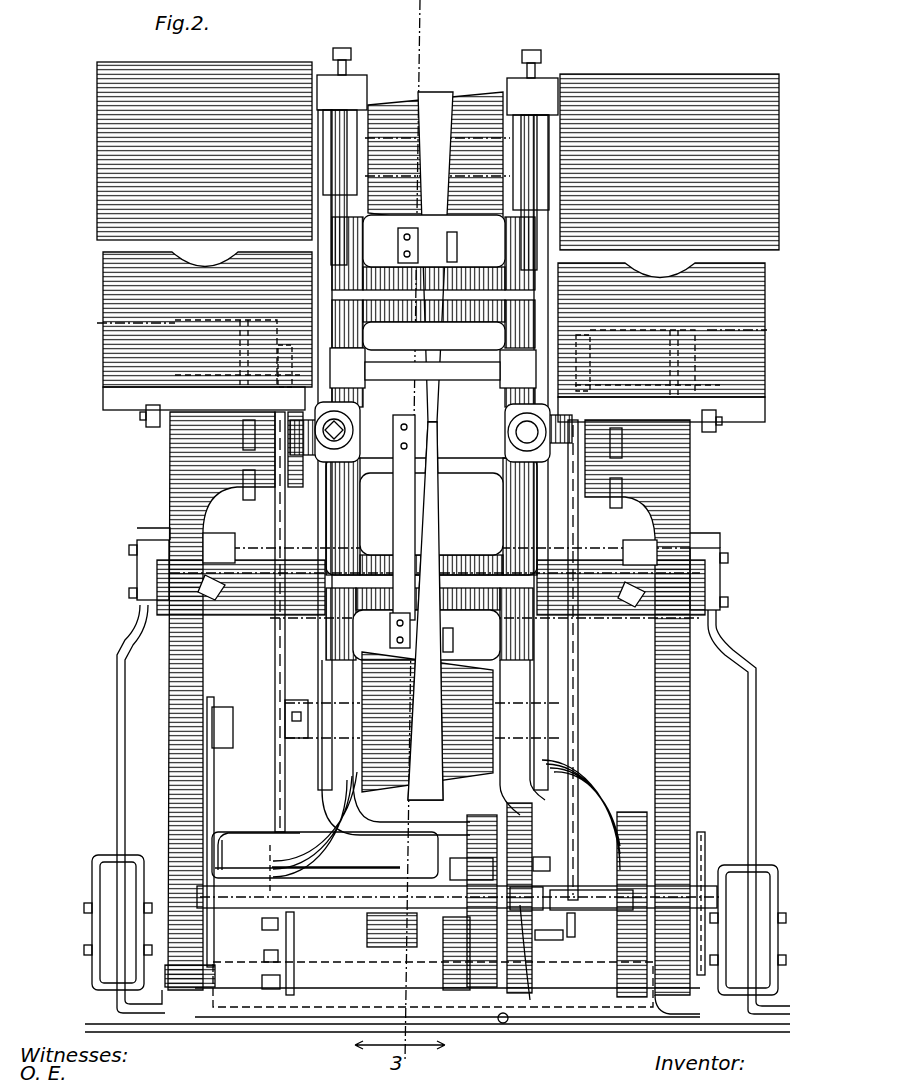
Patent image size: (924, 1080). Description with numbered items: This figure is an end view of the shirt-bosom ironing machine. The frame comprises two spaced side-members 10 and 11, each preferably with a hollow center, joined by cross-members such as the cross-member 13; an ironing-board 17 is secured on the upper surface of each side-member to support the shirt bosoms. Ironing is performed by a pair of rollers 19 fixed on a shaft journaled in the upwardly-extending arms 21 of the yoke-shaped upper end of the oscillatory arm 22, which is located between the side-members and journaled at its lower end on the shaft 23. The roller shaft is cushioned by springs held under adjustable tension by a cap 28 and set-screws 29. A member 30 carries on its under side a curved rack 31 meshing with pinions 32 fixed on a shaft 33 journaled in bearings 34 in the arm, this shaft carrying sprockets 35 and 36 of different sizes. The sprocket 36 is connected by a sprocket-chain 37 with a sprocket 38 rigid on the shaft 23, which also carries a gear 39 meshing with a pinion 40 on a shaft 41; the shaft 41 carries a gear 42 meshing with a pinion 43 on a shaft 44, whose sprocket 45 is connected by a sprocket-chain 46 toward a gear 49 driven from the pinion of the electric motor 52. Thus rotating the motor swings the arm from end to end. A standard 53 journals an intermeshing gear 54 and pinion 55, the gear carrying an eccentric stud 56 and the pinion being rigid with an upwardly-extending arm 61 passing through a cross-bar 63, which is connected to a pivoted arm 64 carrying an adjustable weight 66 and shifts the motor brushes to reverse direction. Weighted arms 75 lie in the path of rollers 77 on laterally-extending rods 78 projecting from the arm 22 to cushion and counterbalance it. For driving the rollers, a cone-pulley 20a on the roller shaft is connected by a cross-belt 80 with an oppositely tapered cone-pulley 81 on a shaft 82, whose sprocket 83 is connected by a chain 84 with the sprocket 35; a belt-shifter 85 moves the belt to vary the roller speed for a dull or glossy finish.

The side-member 10 is at (170, 660).
The side-member 11 is at (682, 698).
The cross-member 13 is at (616, 610).
The ironing-board 17 is at (103, 322).
The roller 19 is at (438, 156).
The cone-pulley 20a is at (448, 95).
The arm 21 is at (338, 150).
The arm 22 is at (344, 530).
The shaft 23 is at (285, 885).
The cap 28 is at (358, 82).
The set-screw 29 is at (345, 47).
The rack-carrying member 30 is at (262, 340).
The curved rack 31 is at (238, 350).
The pinion 32 is at (240, 375).
The shaft 33 is at (473, 382).
The bearing 34 is at (355, 358).
The sprocket 35 is at (284, 344).
The sprocket 36 is at (583, 335).
The sprocket-chain 37 is at (578, 692).
The sprocket 38 is at (570, 937).
The gear 39 is at (528, 1000).
The pinion 40 is at (545, 940).
The shaft 41 is at (555, 895).
The gear 42 is at (467, 832).
The pinion 43 is at (470, 880).
The shaft 44 is at (590, 905).
The sprocket 45 is at (710, 885).
The sprocket-chain 46 is at (702, 830).
The gear 49 is at (625, 812).
The motor 52 is at (442, 968).
The standard 53 is at (296, 945).
The gear 54 is at (262, 982).
The pinion 55 is at (262, 925).
The stud 56 is at (264, 956).
The arm 61 is at (320, 858).
The cross-bar 63 is at (215, 855).
The arm 64 is at (205, 783).
The weight 66 is at (224, 706).
The arm 75 is at (116, 740).
The roller 77 is at (150, 425).
The rod 78 is at (355, 408).
The cross-belt 80 is at (432, 538).
The cone-pulley 81 is at (465, 778).
The shaft 82 is at (362, 730).
The sprocket 83 is at (284, 710).
The chain 84 is at (273, 640).
The belt-shifter 85 is at (415, 465).